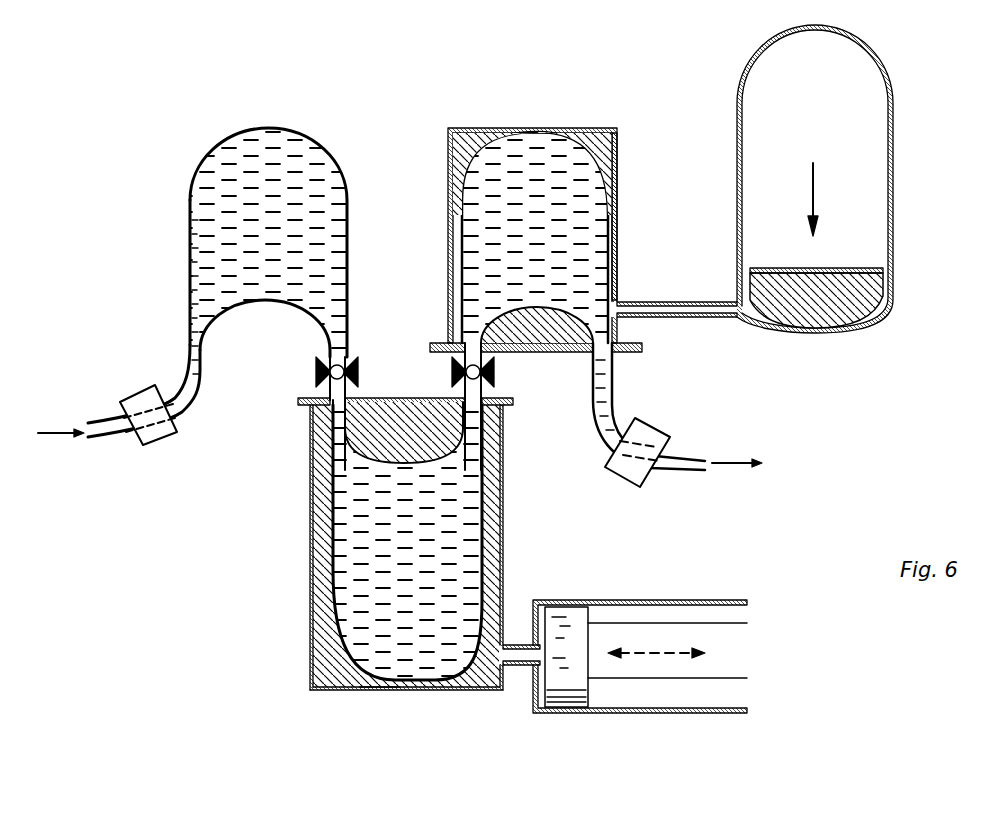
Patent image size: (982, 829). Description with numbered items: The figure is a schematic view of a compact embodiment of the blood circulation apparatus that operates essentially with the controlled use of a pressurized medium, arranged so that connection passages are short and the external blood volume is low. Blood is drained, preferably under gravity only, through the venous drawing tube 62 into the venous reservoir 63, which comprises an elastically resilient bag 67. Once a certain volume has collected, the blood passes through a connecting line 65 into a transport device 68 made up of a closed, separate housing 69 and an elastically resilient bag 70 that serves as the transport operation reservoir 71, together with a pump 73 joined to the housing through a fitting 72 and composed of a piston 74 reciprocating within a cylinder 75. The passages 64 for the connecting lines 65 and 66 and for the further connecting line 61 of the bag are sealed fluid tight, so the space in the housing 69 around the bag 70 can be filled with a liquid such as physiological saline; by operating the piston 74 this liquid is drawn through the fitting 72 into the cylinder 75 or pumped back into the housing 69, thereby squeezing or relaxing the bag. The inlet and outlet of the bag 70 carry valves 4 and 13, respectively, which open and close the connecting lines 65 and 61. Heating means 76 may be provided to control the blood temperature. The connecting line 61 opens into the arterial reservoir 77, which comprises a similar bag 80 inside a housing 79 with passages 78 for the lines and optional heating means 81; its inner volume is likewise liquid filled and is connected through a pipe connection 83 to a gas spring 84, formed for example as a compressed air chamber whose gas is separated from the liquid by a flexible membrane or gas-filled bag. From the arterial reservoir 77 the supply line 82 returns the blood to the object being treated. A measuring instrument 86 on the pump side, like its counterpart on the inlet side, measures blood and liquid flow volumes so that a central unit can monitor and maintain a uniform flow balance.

The valve 4 is at (315, 372).
The valve 13 is at (497, 375).
The connecting line 61 is at (465, 348).
The venous drawing tube 62 is at (178, 352).
The venous reservoir 63 is at (210, 161).
The passages 64 is at (350, 393).
The connecting line 65 is at (338, 350).
The connecting line 66 is at (460, 408).
The elastically resilient bag 67 is at (192, 218).
The transport device 68 is at (302, 518).
The housing 69 is at (310, 585).
The elastically resilient bag 70 is at (345, 633).
The transport operation reservoir 71 is at (380, 699).
The fitting 72 is at (520, 662).
The pump 73 is at (549, 720).
The piston 74 is at (565, 622).
The cylinder 75 is at (577, 715).
The heating means 76 is at (336, 690).
The arterial reservoir 77 is at (445, 188).
The passages 78 is at (588, 336).
The housing 79 is at (567, 128).
The bag 80 is at (505, 127).
The heating means 81 is at (615, 150).
The supply line 82 is at (614, 402).
The pipe connection 83 is at (680, 302).
The gas spring 84 is at (893, 208).
The measuring instrument 86 is at (656, 433).